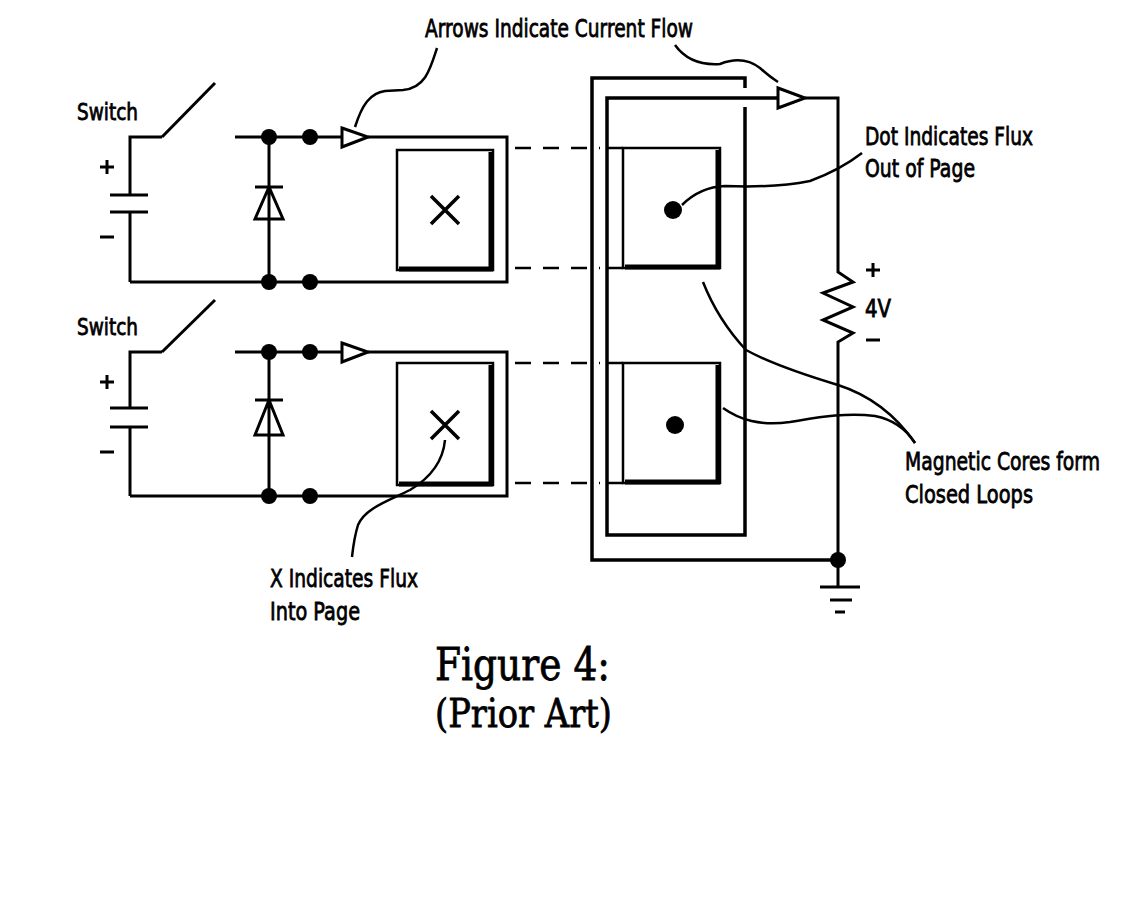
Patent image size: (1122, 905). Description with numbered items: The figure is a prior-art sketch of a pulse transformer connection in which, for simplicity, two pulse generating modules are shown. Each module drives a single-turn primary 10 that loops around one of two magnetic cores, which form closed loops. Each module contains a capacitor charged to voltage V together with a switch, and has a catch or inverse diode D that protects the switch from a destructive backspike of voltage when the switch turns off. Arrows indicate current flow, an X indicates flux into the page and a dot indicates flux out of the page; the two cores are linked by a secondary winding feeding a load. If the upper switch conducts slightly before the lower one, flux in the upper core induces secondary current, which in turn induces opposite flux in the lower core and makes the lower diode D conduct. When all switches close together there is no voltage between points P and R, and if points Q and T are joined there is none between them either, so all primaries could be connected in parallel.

The single-turn primary 10 is at (318, 298).
The voltage V is at (117, 316).
The catch diode D is at (283, 316).
The point P is at (269, 118).
The point Q is at (257, 267).
The point R is at (259, 368).
The point T is at (259, 482).